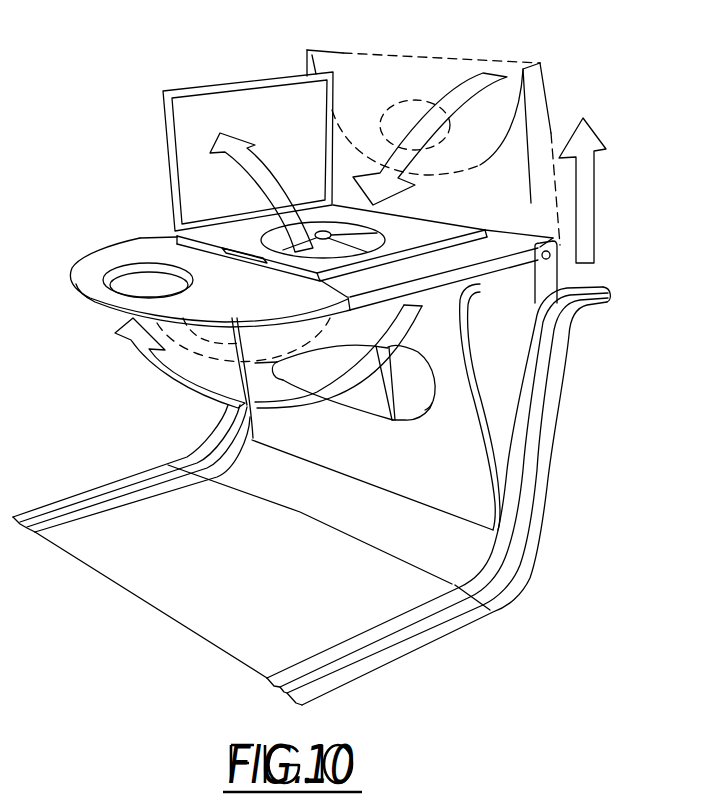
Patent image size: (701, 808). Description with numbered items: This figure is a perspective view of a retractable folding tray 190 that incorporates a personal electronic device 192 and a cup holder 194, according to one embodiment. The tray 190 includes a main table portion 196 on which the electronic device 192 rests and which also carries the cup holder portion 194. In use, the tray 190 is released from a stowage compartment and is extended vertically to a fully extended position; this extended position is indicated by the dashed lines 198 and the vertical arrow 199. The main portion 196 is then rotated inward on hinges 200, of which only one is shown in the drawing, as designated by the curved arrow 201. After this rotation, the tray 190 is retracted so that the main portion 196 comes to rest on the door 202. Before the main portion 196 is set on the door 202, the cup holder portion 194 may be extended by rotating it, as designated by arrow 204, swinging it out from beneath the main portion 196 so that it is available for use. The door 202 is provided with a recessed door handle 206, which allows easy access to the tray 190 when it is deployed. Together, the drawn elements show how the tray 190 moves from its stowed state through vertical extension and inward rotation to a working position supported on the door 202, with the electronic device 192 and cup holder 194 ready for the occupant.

The retractable folding tray 190 is at (540, 243).
The personal electronic device 192 is at (165, 143).
The cup holder portion 194 is at (77, 288).
The main table portion 196 is at (481, 250).
The dashed lines 198 is at (417, 50).
The arrow 199 is at (593, 167).
The hinge 200 is at (560, 271).
The arrow 201 is at (413, 122).
The door 202 is at (495, 463).
The arrow 204 is at (285, 405).
The recessed door handle 206 is at (392, 422).